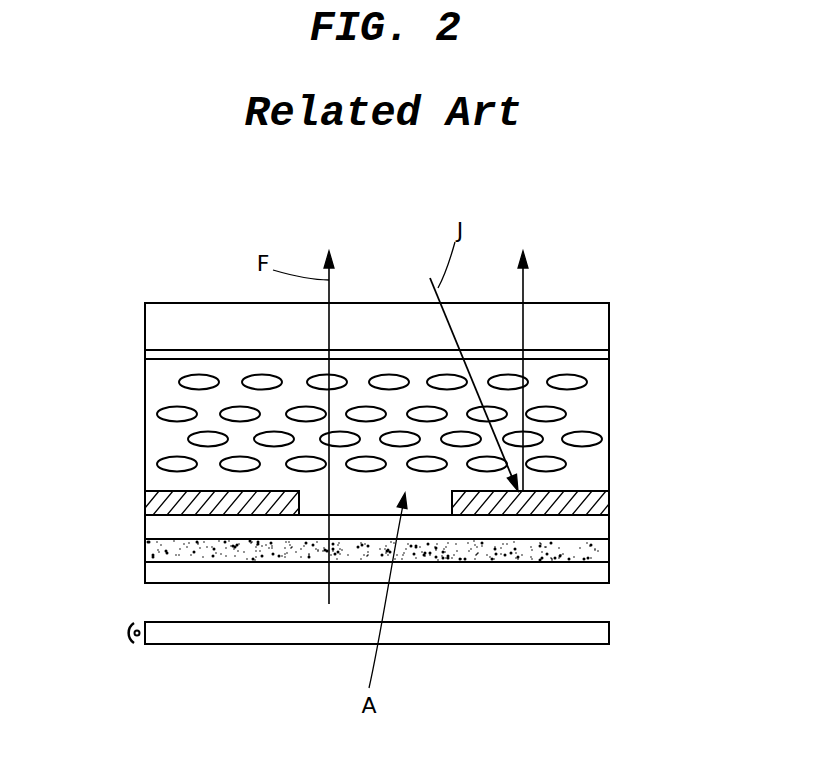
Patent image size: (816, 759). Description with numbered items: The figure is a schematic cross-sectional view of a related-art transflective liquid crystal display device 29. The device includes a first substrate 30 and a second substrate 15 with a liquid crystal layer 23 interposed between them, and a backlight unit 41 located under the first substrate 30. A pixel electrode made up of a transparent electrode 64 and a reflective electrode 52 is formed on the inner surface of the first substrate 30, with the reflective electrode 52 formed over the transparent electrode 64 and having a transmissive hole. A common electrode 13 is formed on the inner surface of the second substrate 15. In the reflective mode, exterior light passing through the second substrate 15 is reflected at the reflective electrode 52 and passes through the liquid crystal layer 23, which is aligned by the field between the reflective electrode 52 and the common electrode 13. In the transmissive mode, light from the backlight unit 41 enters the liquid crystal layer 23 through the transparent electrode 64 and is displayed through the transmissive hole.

The transflective liquid crystal display device 29 is at (127, 300).
The second substrate 15 is at (597, 332).
The common electrode 13 is at (597, 358).
The liquid crystal layer 23 is at (582, 388).
The reflective electrode 52 is at (595, 500).
The transparent electrode 64 is at (597, 553).
The first substrate 30 is at (597, 575).
The backlight unit 41 is at (597, 632).